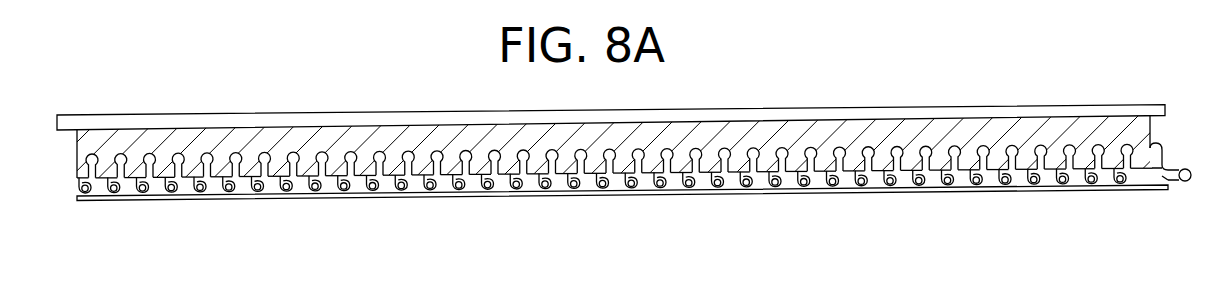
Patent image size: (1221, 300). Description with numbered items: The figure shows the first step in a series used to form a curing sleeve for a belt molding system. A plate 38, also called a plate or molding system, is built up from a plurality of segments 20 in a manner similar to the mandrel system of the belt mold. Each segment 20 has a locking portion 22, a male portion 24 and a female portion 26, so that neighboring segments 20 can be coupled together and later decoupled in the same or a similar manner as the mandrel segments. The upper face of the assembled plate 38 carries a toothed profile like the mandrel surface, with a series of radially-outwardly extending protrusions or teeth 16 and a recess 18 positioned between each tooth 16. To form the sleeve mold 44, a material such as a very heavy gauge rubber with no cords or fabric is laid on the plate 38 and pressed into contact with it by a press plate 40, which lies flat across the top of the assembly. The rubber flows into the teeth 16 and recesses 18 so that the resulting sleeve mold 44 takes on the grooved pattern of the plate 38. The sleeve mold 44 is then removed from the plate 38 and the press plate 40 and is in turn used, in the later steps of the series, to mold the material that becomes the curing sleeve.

The plate 38 is at (64, 190).
The press plate 40 is at (940, 110).
The sleeve mold 44 is at (1153, 130).
The tooth 16 is at (126, 159).
The recess 18 is at (188, 170).
The segment 20 is at (128, 200).
The locking portion 22 is at (296, 182).
The male portion 24 is at (378, 183).
The female portion 26 is at (90, 188).